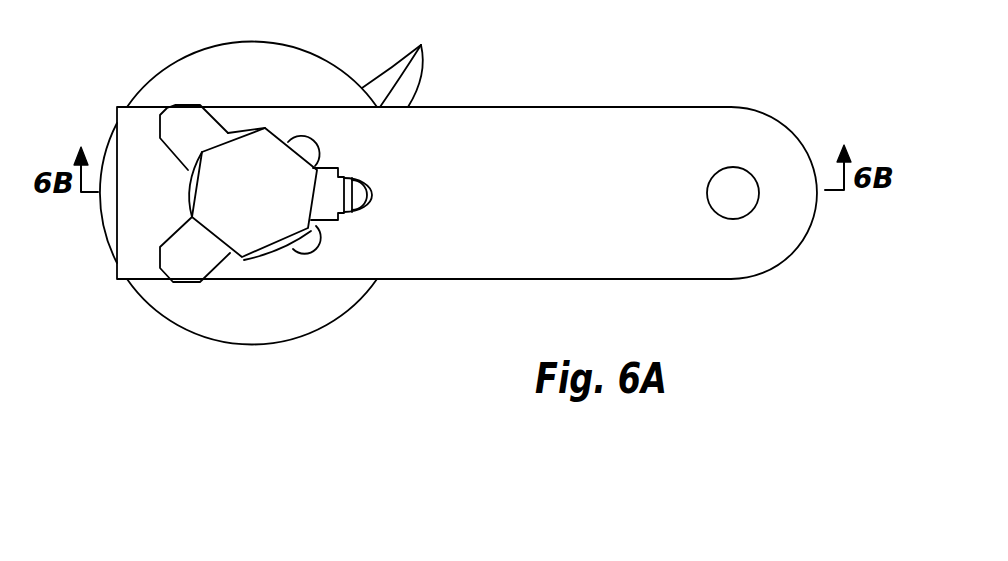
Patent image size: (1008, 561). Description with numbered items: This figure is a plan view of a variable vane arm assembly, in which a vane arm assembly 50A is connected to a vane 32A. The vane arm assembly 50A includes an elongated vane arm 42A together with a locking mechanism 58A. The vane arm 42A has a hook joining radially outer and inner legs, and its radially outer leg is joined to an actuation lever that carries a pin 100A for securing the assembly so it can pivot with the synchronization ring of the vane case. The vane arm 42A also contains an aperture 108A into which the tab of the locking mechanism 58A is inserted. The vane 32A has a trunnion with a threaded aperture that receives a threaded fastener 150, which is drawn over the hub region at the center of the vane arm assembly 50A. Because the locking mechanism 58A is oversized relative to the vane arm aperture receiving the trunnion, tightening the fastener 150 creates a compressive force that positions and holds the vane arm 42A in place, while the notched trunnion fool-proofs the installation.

The vane 32A is at (420, 46).
The vane arm 42A is at (585, 130).
The vane arm assembly 50A is at (362, 333).
The locking mechanism 58A is at (187, 128).
The pin 100A is at (740, 187).
The aperture 108A is at (368, 188).
The threaded fastener 150 is at (258, 228).